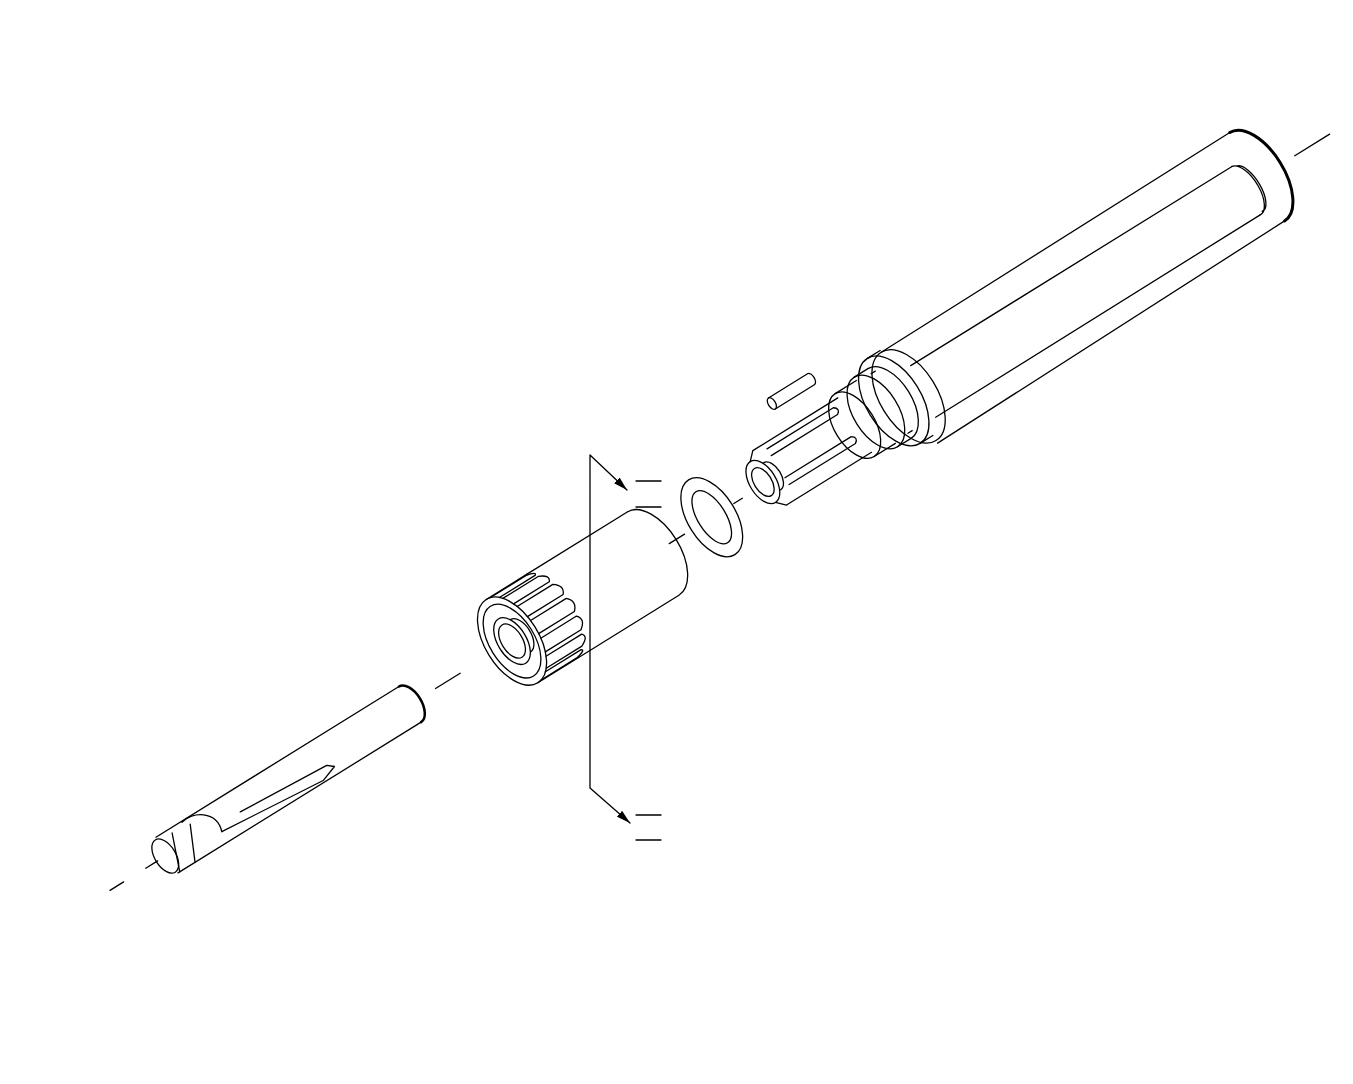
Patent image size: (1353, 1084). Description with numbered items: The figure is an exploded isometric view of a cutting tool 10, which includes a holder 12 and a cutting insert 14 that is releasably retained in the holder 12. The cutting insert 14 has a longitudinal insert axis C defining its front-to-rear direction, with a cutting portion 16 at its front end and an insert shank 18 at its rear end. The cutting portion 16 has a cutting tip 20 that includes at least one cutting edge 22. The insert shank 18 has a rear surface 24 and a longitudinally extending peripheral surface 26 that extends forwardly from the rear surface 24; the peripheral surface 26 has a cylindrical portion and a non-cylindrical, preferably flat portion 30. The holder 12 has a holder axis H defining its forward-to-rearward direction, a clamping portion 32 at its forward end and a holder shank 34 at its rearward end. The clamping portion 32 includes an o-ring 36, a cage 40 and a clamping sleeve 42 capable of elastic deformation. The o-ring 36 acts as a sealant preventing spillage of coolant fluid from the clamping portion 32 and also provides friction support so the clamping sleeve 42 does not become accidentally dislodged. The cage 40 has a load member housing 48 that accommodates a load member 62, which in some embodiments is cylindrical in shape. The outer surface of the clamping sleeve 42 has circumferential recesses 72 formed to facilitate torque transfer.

The cutting tool 10 is at (515, 232).
The holder 12 is at (672, 285).
The cutting insert 14 is at (233, 617).
The cutting portion 16 is at (185, 778).
The insert shank 18 is at (340, 640).
The cutting tip 20 is at (173, 873).
The cutting edge 22 is at (175, 833).
The rear surface 24 is at (425, 710).
The peripheral surface 26 is at (363, 725).
The flat portion 30 is at (380, 748).
The clamping portion 32 is at (753, 372).
The holder shank 34 is at (1052, 263).
The o-ring 36 is at (702, 487).
The cage 40 is at (853, 493).
The clamping sleeve 42 is at (627, 603).
The load member housing 48 is at (820, 400).
The load member 62 is at (790, 390).
The circumferential recesses 72 is at (527, 583).